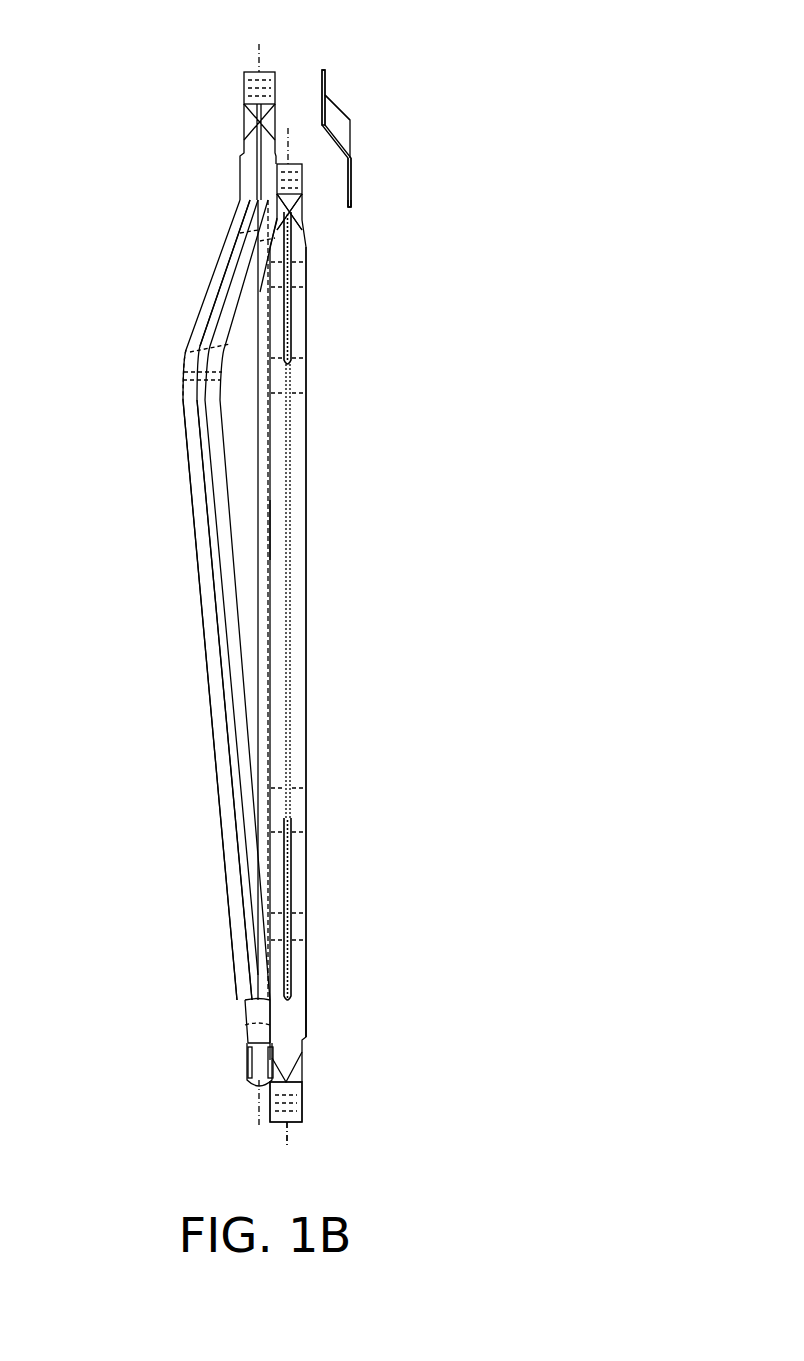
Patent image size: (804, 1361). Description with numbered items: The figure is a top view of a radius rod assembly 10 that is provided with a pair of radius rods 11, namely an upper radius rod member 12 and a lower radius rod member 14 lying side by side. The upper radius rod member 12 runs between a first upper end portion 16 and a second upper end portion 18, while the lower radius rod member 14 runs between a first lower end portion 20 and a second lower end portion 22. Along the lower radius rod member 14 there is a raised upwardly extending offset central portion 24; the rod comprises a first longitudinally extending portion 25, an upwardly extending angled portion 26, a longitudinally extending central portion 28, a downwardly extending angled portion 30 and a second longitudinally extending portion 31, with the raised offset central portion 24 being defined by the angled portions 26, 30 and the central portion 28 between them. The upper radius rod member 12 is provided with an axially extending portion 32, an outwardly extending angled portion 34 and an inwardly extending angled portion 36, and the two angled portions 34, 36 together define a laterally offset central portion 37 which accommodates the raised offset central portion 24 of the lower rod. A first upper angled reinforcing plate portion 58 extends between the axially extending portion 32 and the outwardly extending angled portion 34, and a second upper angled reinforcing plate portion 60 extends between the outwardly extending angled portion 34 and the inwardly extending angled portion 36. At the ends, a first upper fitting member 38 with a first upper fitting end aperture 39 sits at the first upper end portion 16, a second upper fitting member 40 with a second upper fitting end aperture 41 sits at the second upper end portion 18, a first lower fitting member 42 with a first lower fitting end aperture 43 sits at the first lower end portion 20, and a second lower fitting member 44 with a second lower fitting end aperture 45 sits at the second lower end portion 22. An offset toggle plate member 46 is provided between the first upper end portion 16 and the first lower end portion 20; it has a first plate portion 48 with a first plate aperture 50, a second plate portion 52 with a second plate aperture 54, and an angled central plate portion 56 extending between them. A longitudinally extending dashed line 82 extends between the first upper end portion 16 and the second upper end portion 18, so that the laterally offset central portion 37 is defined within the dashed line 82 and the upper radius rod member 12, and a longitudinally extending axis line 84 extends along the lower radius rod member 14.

The radius rod assembly 10 is at (492, 385).
The pair of radius rods 11 is at (178, 863).
The upper radius rod member 12 is at (128, 450).
The lower radius rod member 14 is at (333, 468).
The first upper end portion 16 is at (270, 52).
The second upper end portion 18 is at (212, 1037).
The first lower end portion 20 is at (310, 175).
The second lower end portion 22 is at (330, 1124).
The raised upwardly extending offset central portion 24 is at (332, 670).
The first longitudinally extending portion 25 is at (299, 222).
The upwardly extending angled portion 26 is at (308, 322).
The longitudinally extending central portion 28 is at (308, 531).
The downwardly extending angled portion 30 is at (308, 861).
The second longitudinally extending portion 31 is at (308, 1001).
The axially extending portion 32 is at (240, 172).
The outwardly extending angled portion 34 is at (188, 343).
The inwardly extending angled portion 36 is at (195, 545).
The laterally offset central portion 37 is at (252, 437).
The first upper fitting member 38 is at (250, 70).
The first upper fitting end aperture 39 is at (246, 86).
The second upper fitting member 40 is at (248, 1085).
The second upper fitting end aperture 41 is at (247, 1060).
The first lower fitting member 42 is at (289, 150).
The first lower fitting end aperture 43 is at (302, 184).
The second lower fitting member 44 is at (297, 1123).
The second lower fitting end aperture 45 is at (302, 1100).
The offset toggle plate member 46 is at (376, 103).
The first plate portion 48 is at (326, 70).
The first plate aperture 50 is at (326, 94).
The second plate portion 52 is at (353, 205).
The second plate aperture 54 is at (353, 176).
The angled central plate portion 56 is at (340, 128).
The first upper angled reinforcing plate portion 58 is at (233, 220).
The second upper angled reinforcing plate portion 60 is at (230, 377).
The longitudinally extending dashed line 82 is at (240, 1115).
The longitudinally extending axis line 84 is at (300, 1148).